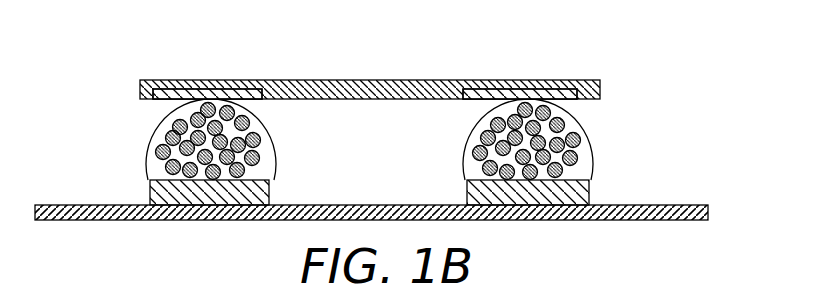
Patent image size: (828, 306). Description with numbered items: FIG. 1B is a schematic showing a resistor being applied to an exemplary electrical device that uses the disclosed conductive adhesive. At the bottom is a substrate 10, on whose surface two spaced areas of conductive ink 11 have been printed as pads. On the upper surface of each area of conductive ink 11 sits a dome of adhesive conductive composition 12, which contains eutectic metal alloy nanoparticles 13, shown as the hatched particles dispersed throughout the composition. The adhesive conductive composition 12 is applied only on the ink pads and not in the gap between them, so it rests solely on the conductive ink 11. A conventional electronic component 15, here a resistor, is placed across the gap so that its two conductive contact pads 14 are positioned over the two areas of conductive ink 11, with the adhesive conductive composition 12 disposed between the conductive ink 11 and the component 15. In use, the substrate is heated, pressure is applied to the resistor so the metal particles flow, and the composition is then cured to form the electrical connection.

The substrate 10 is at (362, 205).
The conductive ink 11 is at (150, 190).
The adhesive conductive composition 12 is at (485, 138).
The eutectic metal alloy nanoparticles 13 is at (565, 140).
The conductive contact pads 14 is at (231, 86).
The conventional electronic component 15 is at (378, 80).